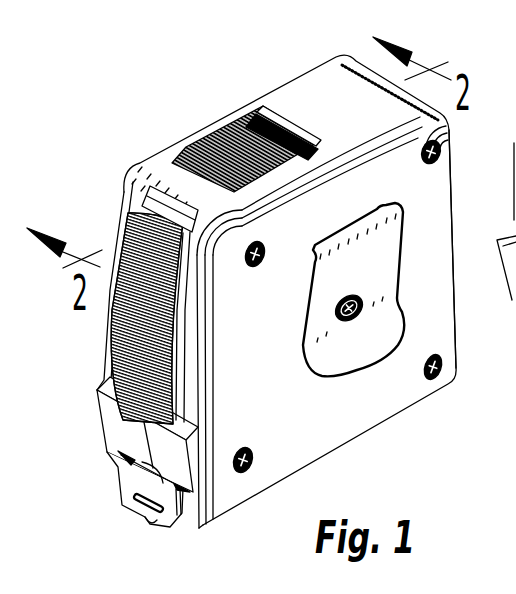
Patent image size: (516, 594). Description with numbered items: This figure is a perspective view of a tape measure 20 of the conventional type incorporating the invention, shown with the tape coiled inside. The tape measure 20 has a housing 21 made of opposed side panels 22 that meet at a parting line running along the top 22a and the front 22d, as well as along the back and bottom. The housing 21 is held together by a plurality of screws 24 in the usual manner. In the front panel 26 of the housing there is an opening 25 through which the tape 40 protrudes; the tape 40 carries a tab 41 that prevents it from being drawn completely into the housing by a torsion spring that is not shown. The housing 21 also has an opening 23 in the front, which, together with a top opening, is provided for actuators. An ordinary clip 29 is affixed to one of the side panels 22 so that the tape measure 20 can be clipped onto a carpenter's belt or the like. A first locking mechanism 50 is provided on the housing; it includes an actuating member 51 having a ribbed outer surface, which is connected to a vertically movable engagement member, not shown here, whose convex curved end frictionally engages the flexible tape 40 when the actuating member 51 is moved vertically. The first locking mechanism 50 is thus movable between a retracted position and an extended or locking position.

The tape measure 20 is at (488, 154).
The housing 21 is at (462, 233).
The side panels 22 is at (304, 434).
The top 22a is at (291, 93).
The front 22d is at (192, 318).
The opening 23 is at (515, 72).
The screws 24 is at (254, 462).
The opening 25 is at (201, 526).
The front panel 26 is at (113, 424).
The clip 29 is at (358, 350).
The tape 40 is at (118, 456).
The tab 41 is at (167, 527).
The first locking mechanism 50 is at (128, 213).
The actuating member 51 is at (133, 268).